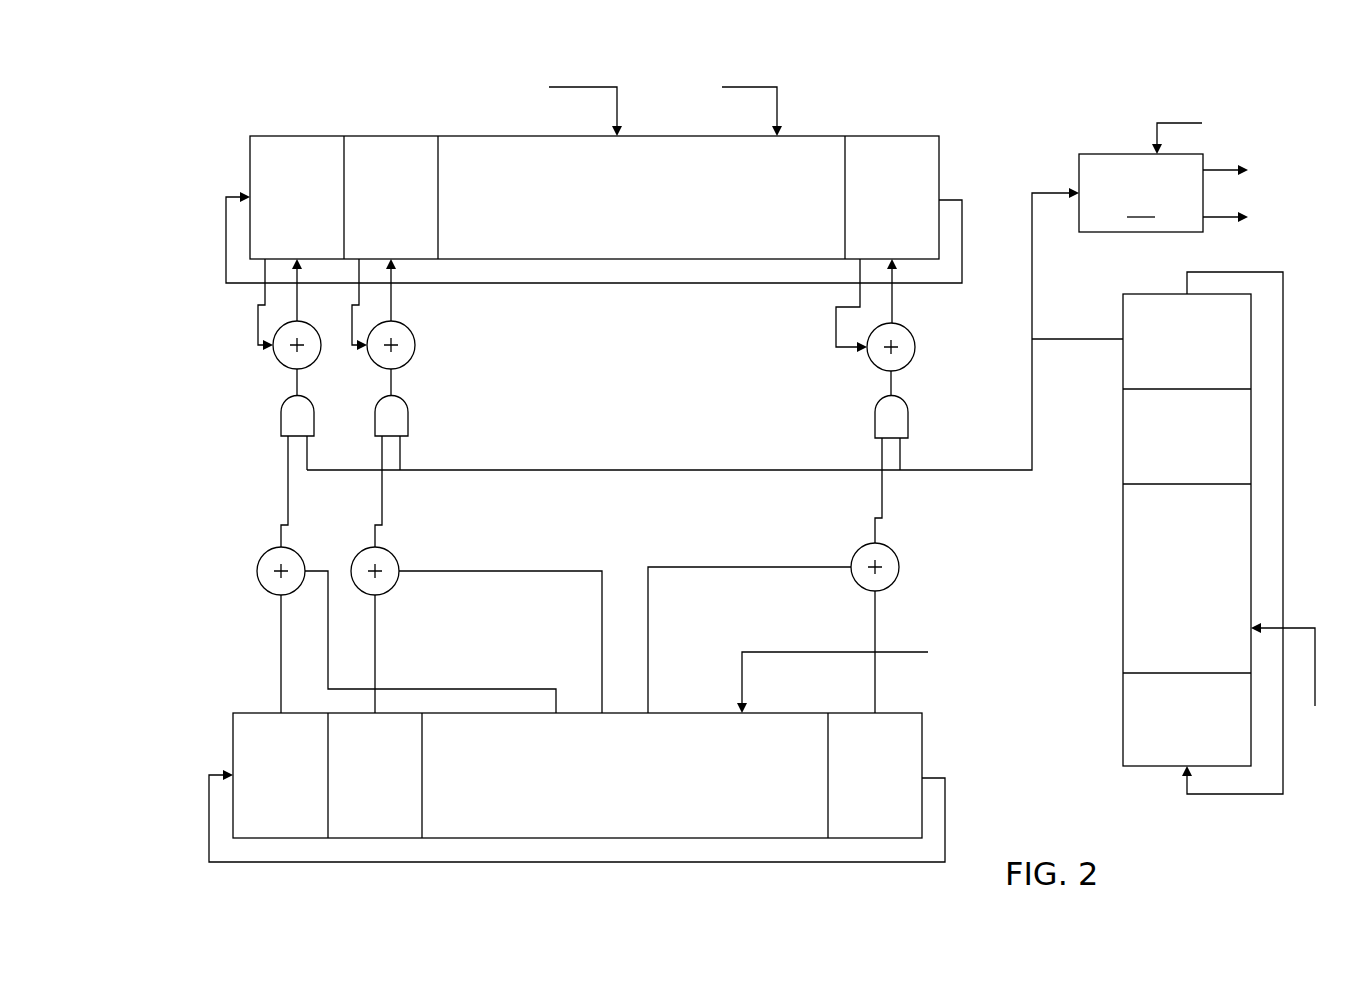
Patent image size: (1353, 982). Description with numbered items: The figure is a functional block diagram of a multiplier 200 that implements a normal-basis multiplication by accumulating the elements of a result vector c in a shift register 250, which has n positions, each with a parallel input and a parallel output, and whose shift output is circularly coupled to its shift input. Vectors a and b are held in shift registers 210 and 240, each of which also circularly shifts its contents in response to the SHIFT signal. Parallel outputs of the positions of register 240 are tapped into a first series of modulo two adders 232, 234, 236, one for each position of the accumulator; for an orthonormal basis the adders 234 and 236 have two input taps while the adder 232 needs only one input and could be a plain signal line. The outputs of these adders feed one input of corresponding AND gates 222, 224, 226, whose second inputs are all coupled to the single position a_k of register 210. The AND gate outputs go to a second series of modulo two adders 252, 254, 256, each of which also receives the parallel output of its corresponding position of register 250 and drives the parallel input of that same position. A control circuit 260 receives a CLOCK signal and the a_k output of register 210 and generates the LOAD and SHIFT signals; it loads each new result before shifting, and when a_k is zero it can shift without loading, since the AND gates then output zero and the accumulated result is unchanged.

The multiplier 200 is at (1004, 130).
The shift register 210 is at (1157, 766).
The AND gate 222 is at (280, 415).
The AND gate 224 is at (408, 415).
The AND gate 226 is at (875, 413).
The modulo 2 adder 232 is at (263, 586).
The modulo 2 adder 234 is at (392, 555).
The modulo 2 adder 236 is at (900, 565).
The shift register 240 is at (232, 745).
The shift register 250 is at (250, 153).
The modulo 2 adder 252 is at (278, 364).
The modulo 2 adder 254 is at (413, 337).
The modulo 2 adder 256 is at (917, 347).
The control circuit 260 is at (1192, 173).